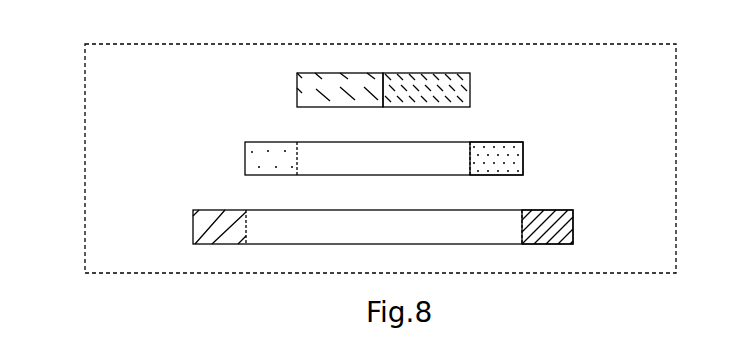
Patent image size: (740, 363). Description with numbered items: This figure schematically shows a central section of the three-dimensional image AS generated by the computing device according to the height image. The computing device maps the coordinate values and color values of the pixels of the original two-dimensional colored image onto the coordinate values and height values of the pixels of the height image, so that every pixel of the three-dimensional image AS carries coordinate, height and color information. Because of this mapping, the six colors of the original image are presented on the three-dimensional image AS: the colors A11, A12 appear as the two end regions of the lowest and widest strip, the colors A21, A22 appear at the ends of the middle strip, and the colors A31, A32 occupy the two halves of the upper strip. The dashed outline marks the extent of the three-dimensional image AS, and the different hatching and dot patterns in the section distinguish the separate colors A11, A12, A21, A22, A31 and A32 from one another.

The 3D image AS is at (85, 273).
The color A31 is at (297, 85).
The color A32 is at (470, 87).
The color A21 is at (245, 158).
The color A22 is at (523, 160).
The color A11 is at (193, 228).
The color A12 is at (573, 222).